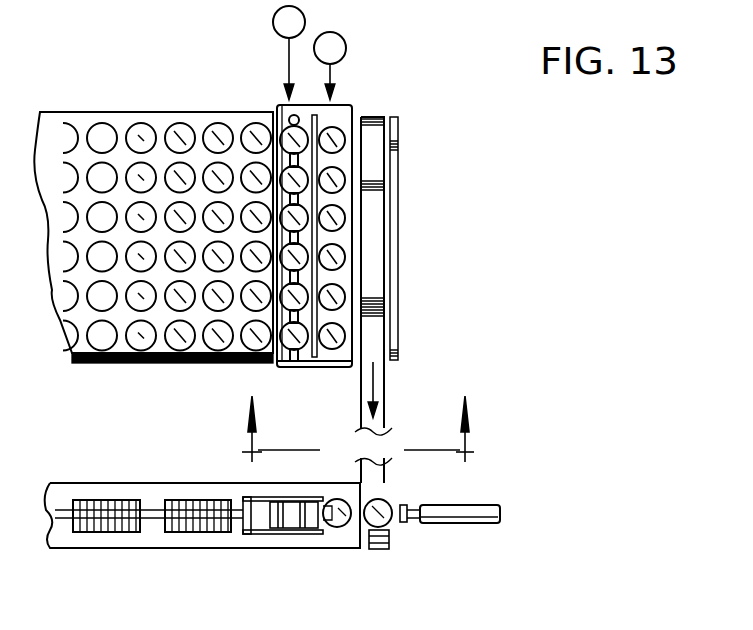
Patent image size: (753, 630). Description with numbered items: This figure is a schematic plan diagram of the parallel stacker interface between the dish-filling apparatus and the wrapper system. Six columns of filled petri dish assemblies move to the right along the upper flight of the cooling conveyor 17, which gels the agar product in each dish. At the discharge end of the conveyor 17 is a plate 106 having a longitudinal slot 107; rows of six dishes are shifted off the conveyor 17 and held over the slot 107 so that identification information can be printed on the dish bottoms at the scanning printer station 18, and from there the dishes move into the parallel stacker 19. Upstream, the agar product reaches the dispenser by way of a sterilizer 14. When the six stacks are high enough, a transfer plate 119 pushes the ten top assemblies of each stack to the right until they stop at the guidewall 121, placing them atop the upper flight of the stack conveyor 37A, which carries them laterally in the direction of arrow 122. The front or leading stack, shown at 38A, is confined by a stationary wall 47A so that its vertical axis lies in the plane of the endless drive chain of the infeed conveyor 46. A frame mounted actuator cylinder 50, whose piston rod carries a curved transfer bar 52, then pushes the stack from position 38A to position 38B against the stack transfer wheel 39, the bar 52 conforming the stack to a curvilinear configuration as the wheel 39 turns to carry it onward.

The sterilizer 14 is at (359, 429).
The cooling conveyor 17 is at (120, 365).
The scanning printer station 18 is at (305, 19).
The parallel stacker 19 is at (346, 48).
The stack conveyor 37A is at (385, 478).
The leading stack position 38A is at (388, 522).
The stack position against wheel 38B is at (335, 530).
The stack transfer wheel 39 is at (268, 542).
The infeed conveyor 46 is at (62, 515).
The stationary wall 47A is at (382, 550).
The actuator cylinder 50 is at (487, 505).
The transfer bar 52 is at (402, 520).
The plate 106 is at (298, 362).
The longitudinal slot 107 is at (292, 118).
The transfer plate 119 is at (316, 118).
The guidewall 121 is at (393, 176).
The arrow 122 is at (385, 373).